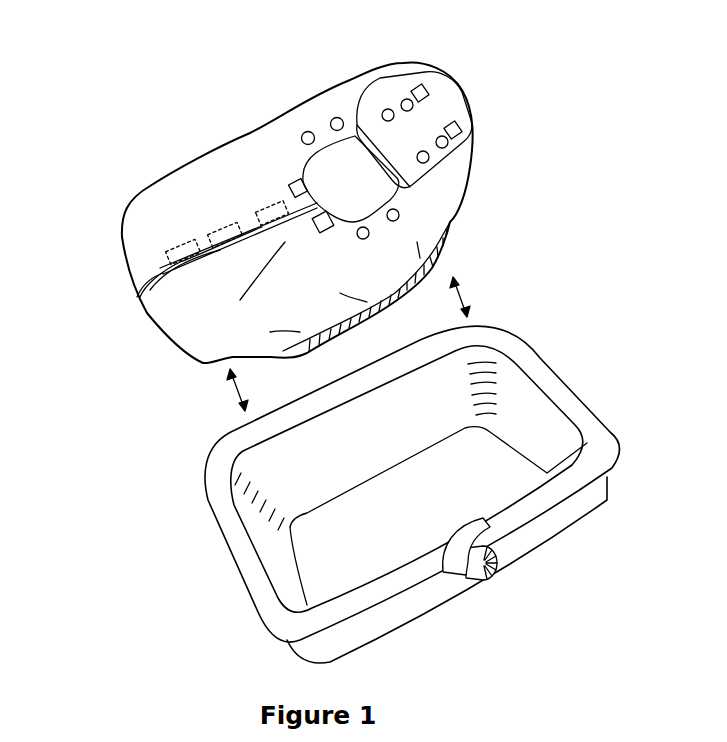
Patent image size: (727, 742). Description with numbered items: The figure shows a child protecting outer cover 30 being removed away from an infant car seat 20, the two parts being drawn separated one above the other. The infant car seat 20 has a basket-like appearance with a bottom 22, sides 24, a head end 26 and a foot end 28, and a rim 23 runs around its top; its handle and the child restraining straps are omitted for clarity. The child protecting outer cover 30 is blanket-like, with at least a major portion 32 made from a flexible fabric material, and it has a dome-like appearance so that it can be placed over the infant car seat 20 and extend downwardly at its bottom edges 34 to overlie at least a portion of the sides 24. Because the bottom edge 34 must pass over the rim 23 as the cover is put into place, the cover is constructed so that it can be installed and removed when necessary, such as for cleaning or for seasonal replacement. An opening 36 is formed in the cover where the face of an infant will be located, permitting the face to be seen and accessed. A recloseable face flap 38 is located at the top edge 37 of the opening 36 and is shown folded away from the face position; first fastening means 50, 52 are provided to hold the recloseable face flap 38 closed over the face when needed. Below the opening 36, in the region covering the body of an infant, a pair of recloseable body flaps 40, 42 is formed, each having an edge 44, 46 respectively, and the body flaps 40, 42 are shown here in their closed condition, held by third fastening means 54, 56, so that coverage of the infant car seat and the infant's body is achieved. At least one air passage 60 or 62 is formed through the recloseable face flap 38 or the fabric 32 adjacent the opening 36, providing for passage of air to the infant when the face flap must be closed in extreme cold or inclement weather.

The infant car seat 20 is at (448, 494).
The bottom 22 is at (399, 516).
The rim 23 is at (547, 384).
The sides 24 is at (356, 440).
The head end 26 is at (528, 431).
The foot end 28 is at (263, 568).
The child protecting outer cover 30 is at (540, 83).
The flexible fabric material 32 is at (137, 267).
The bottom edges 34 is at (457, 251).
The opening 36 is at (347, 210).
The top edge 37 is at (396, 172).
The recloseable face flap 38 is at (433, 112).
The recloseable body flap 40 is at (245, 176).
The recloseable body flap 42 is at (240, 300).
The edge 44 is at (257, 230).
The edge 46 is at (223, 248).
The first fastening means 50 is at (292, 182).
The first fastening means 52 is at (419, 88).
The third fastening means 54 is at (154, 224).
The third fastening means 56 is at (177, 250).
The air passage 60 is at (470, 140).
The air passage 62 is at (400, 213).